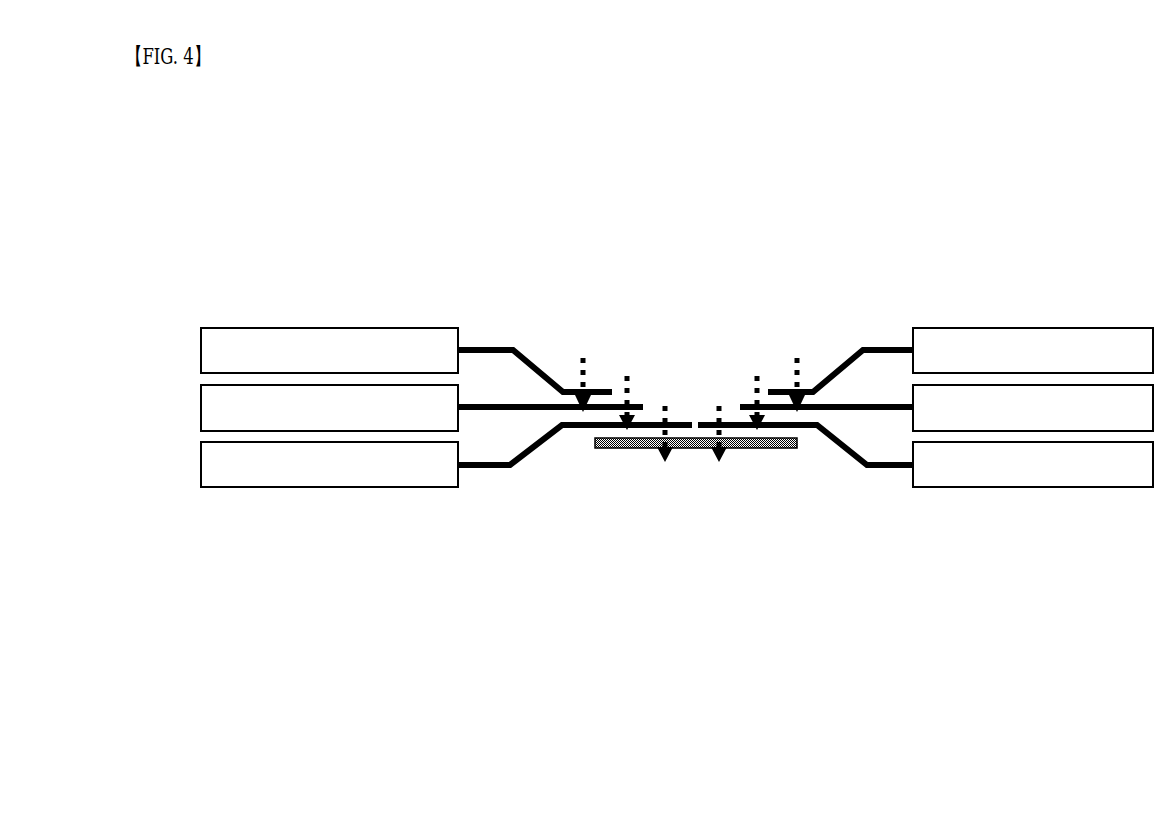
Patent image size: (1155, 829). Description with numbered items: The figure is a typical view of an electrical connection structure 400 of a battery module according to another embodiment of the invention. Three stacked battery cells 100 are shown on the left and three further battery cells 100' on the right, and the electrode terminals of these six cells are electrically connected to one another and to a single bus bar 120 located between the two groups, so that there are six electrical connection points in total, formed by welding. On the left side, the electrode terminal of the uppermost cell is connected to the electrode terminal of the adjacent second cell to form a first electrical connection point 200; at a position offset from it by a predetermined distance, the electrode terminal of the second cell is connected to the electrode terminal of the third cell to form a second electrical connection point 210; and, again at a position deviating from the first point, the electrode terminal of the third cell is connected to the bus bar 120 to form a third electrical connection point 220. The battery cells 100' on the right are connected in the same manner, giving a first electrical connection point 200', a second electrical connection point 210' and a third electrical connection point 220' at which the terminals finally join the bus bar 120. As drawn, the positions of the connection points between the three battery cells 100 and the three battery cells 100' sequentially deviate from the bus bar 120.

The interconnection structure 400 is at (183, 187).
The battery cells 100 is at (327, 358).
The battery cells 100' is at (1033, 344).
The first electrical connection point 200 is at (535, 347).
The second electrical connection point 210 is at (550, 361).
The third electrical connection point 220 is at (575, 387).
The first electrical connection point 200' is at (840, 340).
The second electrical connection point 210' is at (826, 347).
The third electrical connection point 220' is at (805, 378).
The bus bar 120 is at (687, 452).